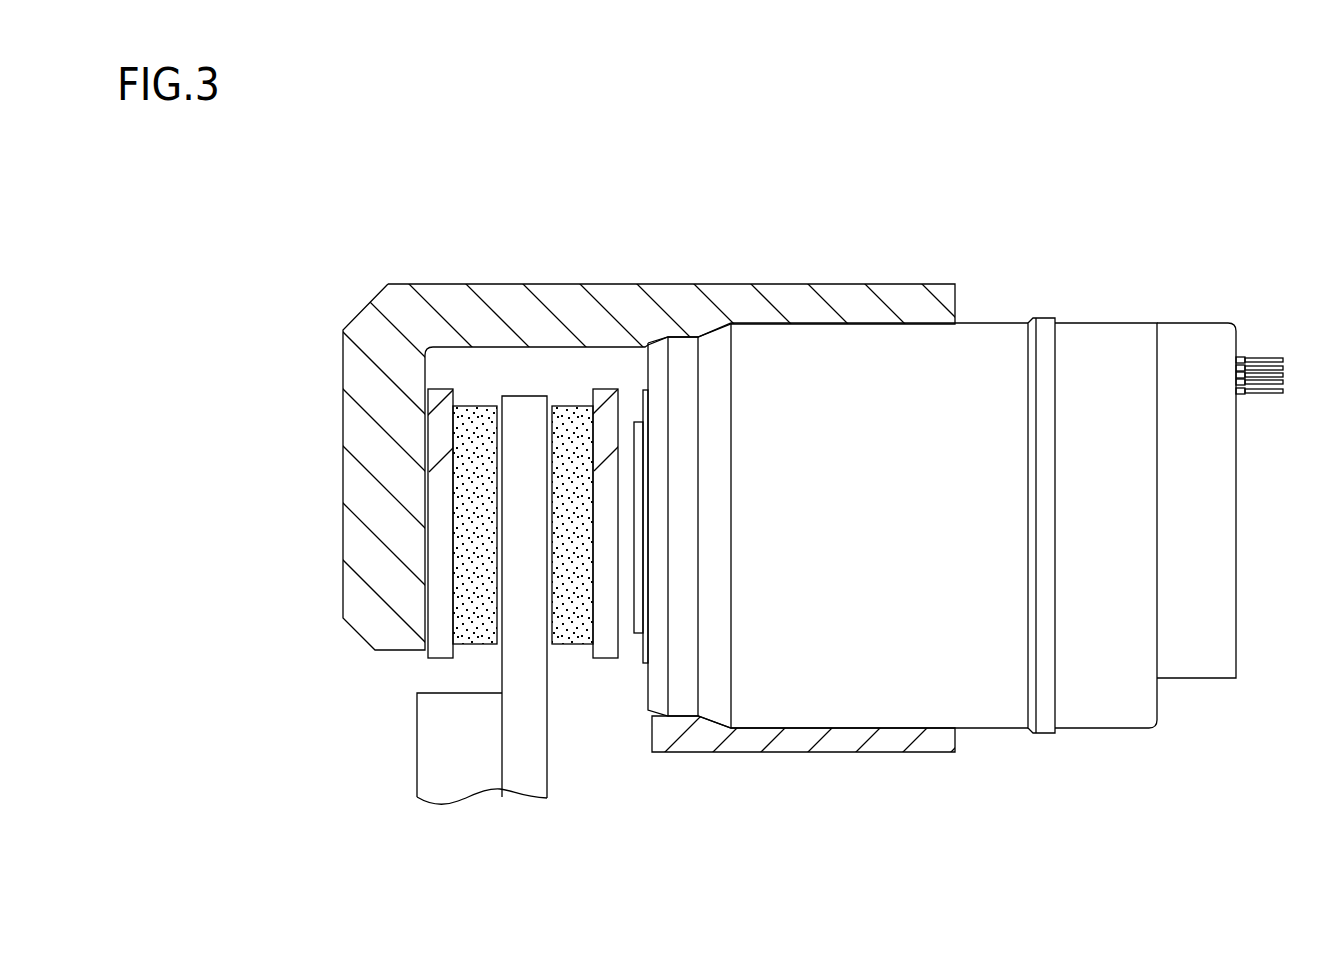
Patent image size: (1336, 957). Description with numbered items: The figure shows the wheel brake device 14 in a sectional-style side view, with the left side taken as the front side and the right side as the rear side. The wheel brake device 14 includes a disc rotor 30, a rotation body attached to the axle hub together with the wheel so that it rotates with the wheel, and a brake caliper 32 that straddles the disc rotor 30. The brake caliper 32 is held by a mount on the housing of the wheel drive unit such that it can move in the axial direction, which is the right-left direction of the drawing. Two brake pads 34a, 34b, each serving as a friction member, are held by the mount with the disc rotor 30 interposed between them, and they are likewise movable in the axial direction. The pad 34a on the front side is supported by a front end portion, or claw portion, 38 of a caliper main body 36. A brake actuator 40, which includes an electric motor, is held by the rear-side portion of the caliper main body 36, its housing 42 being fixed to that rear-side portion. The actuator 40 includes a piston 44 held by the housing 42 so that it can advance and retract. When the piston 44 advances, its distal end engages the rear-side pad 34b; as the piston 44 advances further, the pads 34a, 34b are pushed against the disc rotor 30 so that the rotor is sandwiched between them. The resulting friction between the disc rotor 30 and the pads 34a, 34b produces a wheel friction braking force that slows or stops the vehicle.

The wheel brake device 14 is at (296, 185).
The disc rotor 30 is at (524, 775).
The brake caliper 32 is at (829, 250).
The brake pad 34a is at (474, 635).
The brake pad 34b is at (578, 636).
The caliper main body 36 is at (615, 305).
The front end portion (claw portion) 38 is at (367, 557).
The brake actuator 40 is at (1097, 297).
The housing 42 is at (1088, 710).
The piston 44 is at (637, 633).